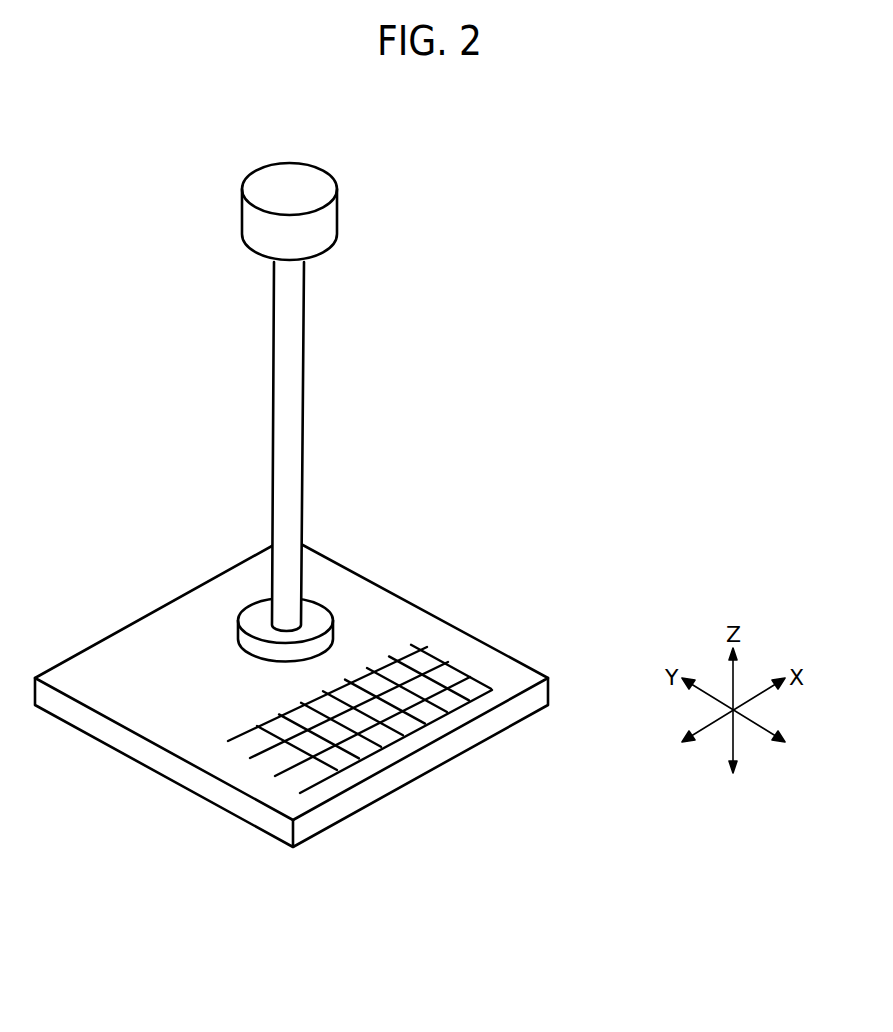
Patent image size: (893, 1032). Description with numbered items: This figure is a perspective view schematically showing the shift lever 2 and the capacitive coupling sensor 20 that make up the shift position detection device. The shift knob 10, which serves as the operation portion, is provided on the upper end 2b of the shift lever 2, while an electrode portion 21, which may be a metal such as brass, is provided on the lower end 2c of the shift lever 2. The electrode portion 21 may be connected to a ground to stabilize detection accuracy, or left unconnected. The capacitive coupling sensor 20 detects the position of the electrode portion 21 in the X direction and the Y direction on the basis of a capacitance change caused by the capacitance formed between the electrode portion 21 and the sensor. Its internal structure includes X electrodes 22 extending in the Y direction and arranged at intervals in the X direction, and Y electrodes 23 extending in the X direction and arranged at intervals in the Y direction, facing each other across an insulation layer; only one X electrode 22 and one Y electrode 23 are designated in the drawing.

The shift lever 2 is at (297, 327).
The upper end 2b is at (240, 258).
The lower end 2c is at (267, 608).
The shift knob 10 is at (328, 218).
The capacitive coupling sensor 20 is at (458, 638).
The electrode portion 21 is at (312, 606).
The X electrode 22 is at (360, 754).
The Y electrode 23 is at (322, 782).